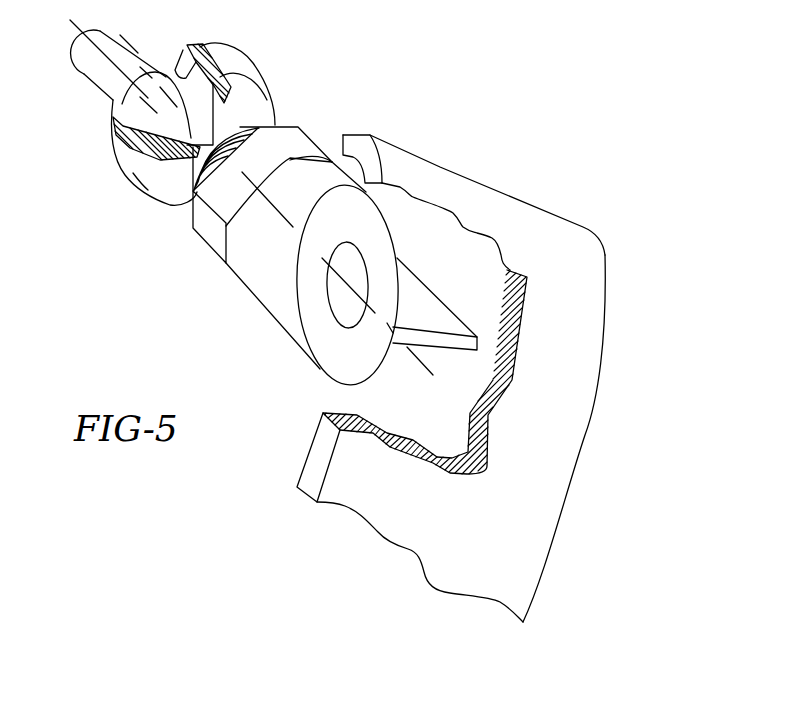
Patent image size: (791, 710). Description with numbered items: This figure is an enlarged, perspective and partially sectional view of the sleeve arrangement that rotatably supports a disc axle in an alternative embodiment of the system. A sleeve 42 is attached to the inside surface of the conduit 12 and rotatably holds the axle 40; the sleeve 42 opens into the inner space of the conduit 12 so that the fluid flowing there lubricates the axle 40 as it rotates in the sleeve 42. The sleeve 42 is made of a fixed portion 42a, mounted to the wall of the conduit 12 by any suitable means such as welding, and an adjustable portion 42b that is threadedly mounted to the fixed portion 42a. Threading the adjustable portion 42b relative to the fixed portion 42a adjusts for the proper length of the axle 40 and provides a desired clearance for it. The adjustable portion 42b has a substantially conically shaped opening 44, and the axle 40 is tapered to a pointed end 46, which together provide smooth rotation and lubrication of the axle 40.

The conduit 12 is at (558, 223).
The axle 40 is at (125, 35).
The sleeve 42 is at (274, 213).
The fixed portion 42a is at (207, 243).
The adjustable portion 42b is at (132, 180).
The conically shaped opening 44 is at (183, 80).
The pointed end 46 is at (122, 104).